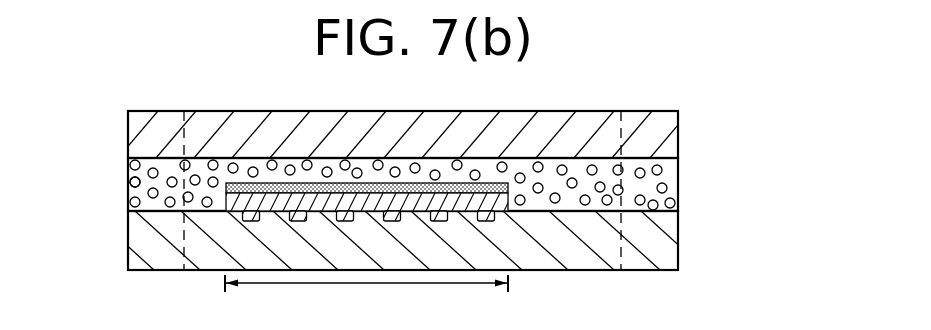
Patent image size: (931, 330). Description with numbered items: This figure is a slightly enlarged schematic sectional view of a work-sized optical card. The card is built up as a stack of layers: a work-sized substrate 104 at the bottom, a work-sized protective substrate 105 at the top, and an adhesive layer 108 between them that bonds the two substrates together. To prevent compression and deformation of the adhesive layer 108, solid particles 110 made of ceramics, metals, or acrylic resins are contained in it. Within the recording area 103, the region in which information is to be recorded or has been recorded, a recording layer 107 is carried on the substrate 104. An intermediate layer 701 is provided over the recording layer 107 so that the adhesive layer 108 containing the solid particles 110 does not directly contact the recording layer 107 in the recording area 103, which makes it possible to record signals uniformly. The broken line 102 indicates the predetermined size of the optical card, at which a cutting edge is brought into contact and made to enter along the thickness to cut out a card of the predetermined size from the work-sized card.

The broken line indicating predetermined size 102 is at (621, 273).
The recording area 103 is at (357, 283).
The substrate 104 is at (674, 232).
The protective substrate 105 is at (673, 143).
The recording layer 107 is at (282, 192).
The adhesive layer 108 is at (674, 176).
The solid particles 110 is at (137, 186).
The intermediate layer 701 is at (501, 160).